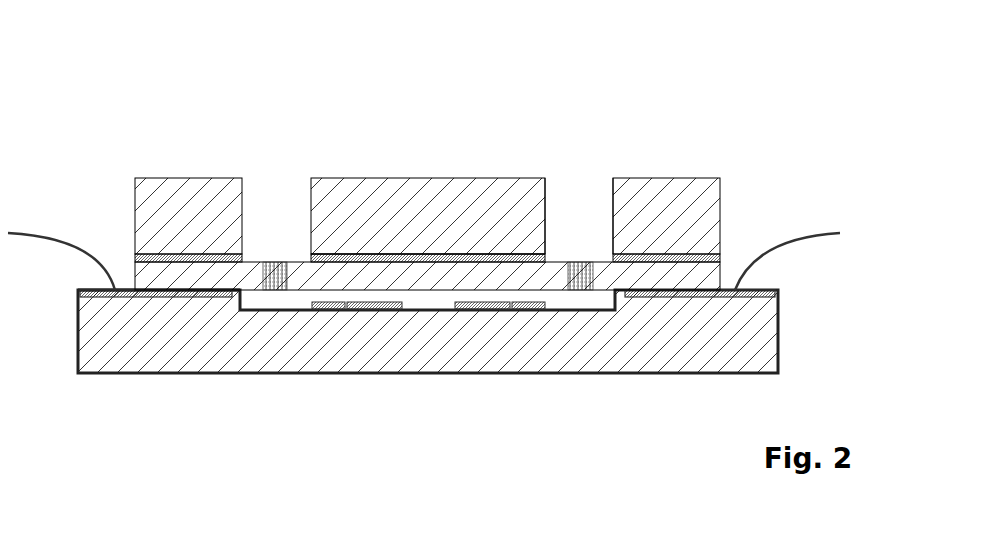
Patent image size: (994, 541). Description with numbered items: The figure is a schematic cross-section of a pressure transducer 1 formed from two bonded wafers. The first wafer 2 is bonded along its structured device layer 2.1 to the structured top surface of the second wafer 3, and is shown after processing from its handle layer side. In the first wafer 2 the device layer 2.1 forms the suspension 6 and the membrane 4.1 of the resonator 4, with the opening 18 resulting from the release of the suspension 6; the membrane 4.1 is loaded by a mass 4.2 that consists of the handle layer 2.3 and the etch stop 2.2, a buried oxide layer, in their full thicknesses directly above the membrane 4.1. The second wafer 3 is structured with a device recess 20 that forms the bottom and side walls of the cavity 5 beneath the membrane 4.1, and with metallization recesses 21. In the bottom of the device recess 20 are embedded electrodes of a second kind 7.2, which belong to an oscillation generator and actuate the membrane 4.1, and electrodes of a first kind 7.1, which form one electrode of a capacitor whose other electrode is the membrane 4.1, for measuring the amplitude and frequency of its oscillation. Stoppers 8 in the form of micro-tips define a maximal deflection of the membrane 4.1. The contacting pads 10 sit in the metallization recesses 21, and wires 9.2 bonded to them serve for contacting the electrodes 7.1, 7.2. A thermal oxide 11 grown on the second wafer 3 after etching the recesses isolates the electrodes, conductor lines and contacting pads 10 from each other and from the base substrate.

The pressure transducer 1 is at (226, 85).
The first wafer 2 is at (453, 199).
The device layer 2.1 is at (170, 283).
The etch stop 2.2 is at (185, 258).
The handle layer 2.3 is at (205, 200).
The second wafer 3 is at (837, 290).
The resonator 4 is at (424, 174).
The membrane 4.1 is at (428, 283).
The mass 4.2 is at (368, 204).
The cavity 5 is at (436, 305).
The suspension 6 is at (277, 285).
The electrodes of a first kind 7.1 is at (489, 304).
The electrodes of a second kind 7.2 is at (531, 304).
The stoppers 8 is at (346, 310).
The wires 9.2 is at (782, 238).
The contacting pads 10 is at (130, 294).
The thermal oxide 11 is at (469, 309).
The opening 18 is at (581, 200).
The device recess 20 is at (594, 300).
The metallization recesses 21 is at (108, 297).